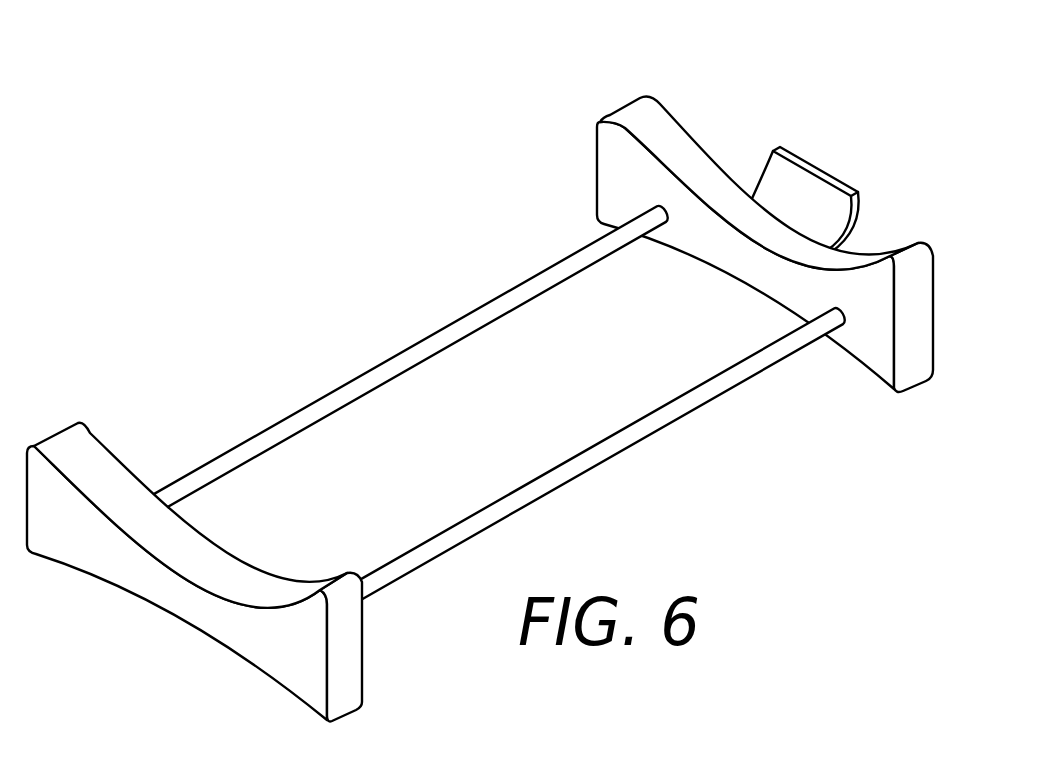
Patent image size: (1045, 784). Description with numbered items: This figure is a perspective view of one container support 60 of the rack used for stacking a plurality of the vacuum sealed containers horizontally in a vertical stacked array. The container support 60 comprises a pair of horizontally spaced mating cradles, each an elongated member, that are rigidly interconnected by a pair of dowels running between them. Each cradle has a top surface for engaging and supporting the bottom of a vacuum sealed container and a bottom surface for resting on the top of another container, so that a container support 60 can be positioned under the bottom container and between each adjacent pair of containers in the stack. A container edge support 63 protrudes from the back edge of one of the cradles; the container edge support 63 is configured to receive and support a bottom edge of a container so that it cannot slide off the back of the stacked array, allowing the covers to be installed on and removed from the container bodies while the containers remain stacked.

The container support 60 is at (304, 357).
The container edge support 63 is at (814, 163).